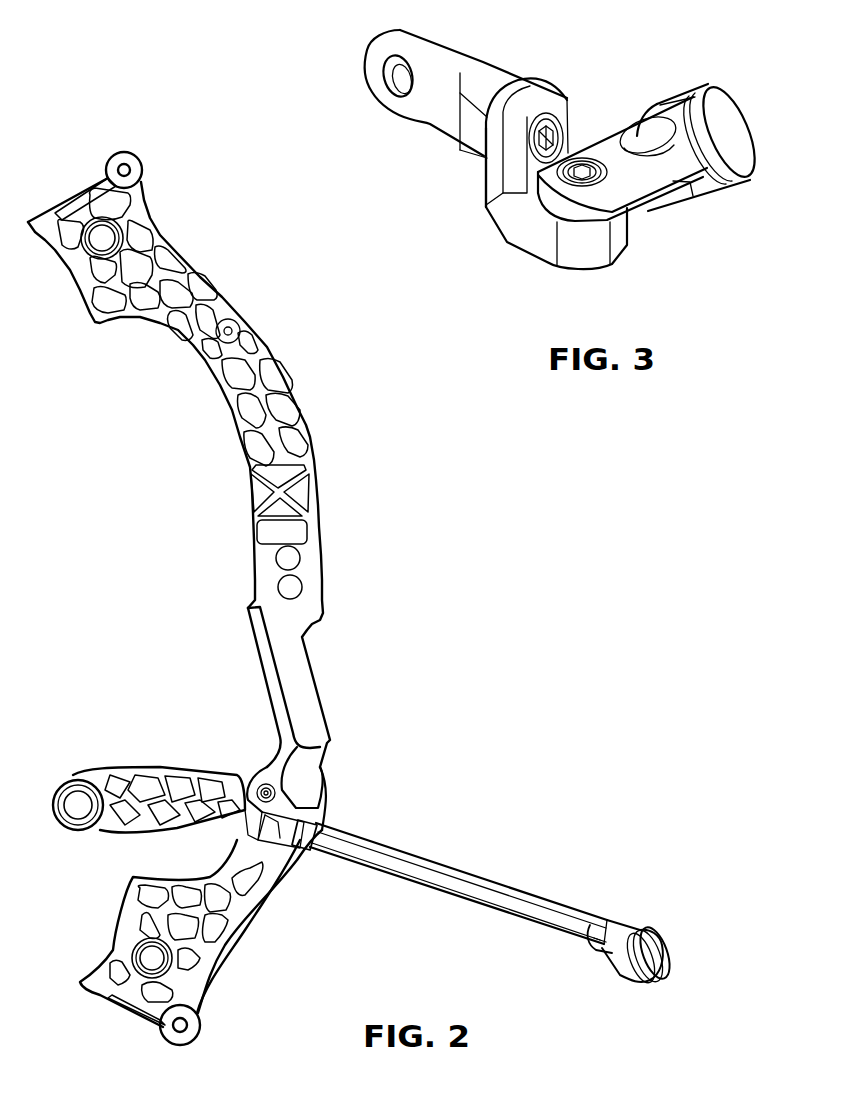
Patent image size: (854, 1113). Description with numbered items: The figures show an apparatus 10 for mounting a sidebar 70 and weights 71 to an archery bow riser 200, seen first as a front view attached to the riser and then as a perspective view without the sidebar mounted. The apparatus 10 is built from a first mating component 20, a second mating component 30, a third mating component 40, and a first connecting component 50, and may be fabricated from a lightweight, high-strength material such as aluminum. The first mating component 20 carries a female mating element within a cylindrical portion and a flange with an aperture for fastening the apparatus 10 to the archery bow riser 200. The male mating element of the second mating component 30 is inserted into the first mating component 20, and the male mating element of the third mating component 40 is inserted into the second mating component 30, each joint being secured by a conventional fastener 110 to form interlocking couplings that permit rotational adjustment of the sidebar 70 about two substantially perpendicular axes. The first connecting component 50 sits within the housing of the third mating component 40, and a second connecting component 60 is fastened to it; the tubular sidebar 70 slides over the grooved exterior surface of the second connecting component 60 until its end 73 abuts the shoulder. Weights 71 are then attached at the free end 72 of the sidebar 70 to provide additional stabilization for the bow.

In FIG. 3, the apparatus 10 is at (449, 197).
In FIG. 2, the apparatus 10 is at (224, 831).
In FIG. 3, the first mating component 20 is at (445, 98).
In FIG. 3, the second mating component 30 is at (508, 212).
In FIG. 3, the third mating component 40 is at (608, 131).
In FIG. 3, the first connecting component 50 is at (663, 138).
In FIG. 3, the second connecting component 60 is at (722, 127).
In FIG. 3, the conventional fastener 110 is at (581, 170).
In FIG. 2, the archery bow riser 200 is at (318, 430).
In FIG. 2, the sidebar 70 is at (473, 880).
In FIG. 2, the weights 71 is at (668, 940).
In FIG. 2, the free end 72 is at (590, 930).
In FIG. 2, the end 73 is at (338, 837).